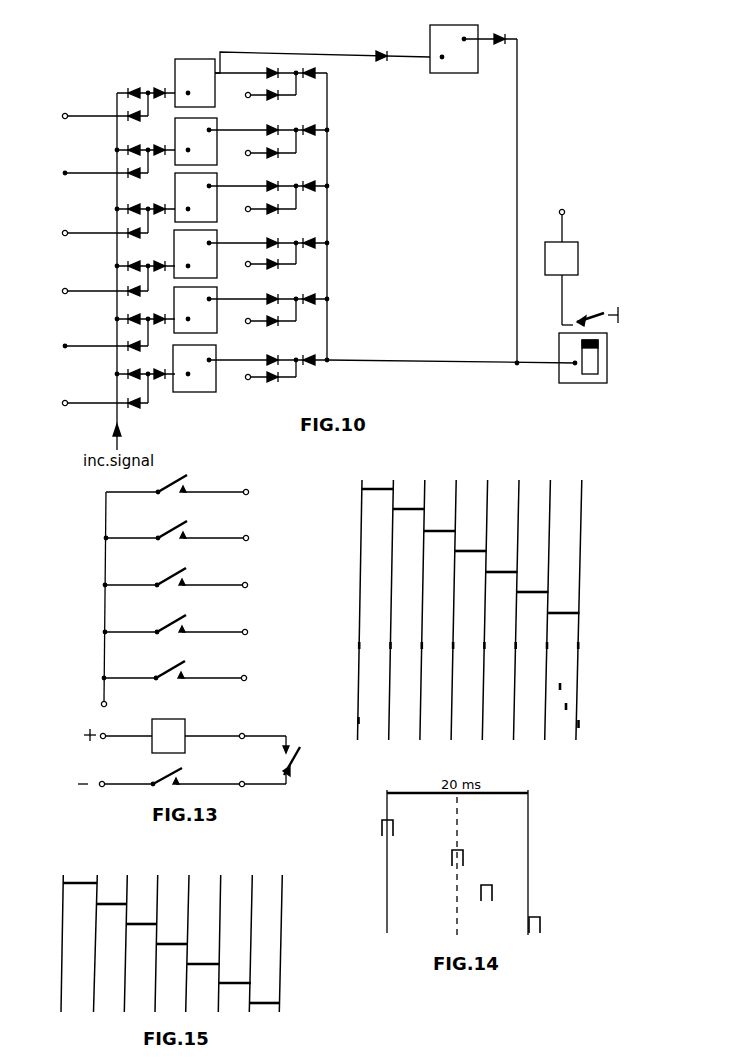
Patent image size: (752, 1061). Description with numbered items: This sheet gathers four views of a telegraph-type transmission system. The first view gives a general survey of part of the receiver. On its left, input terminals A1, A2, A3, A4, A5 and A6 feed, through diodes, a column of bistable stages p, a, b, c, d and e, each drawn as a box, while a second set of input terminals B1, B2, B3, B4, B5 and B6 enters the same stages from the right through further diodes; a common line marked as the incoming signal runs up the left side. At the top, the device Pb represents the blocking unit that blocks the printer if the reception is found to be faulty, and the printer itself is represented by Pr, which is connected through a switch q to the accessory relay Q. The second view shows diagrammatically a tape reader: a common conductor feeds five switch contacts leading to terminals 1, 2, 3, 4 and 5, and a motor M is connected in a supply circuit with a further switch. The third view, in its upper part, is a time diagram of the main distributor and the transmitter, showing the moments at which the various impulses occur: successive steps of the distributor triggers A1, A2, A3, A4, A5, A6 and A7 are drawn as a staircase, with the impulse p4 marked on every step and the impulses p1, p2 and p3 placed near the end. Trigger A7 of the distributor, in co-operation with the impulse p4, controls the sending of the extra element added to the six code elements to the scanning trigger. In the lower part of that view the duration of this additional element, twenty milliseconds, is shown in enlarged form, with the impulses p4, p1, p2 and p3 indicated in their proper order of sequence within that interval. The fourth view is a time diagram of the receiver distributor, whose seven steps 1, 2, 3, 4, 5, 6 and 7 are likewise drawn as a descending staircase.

In FIG. 10, the input terminal A1 is at (94, 111).
In FIG. 14, the input terminal A1 is at (363, 488).
In FIG. 10, the input terminal A2 is at (94, 168).
In FIG. 14, the input terminal A2 is at (378, 508).
In FIG. 10, the input terminal A3 is at (94, 228).
In FIG. 14, the input terminal A3 is at (394, 528).
In FIG. 10, the input terminal A4 is at (94, 285).
In FIG. 14, the input terminal A4 is at (409, 548).
In FIG. 10, the input terminal A5 is at (94, 339).
In FIG. 14, the input terminal A5 is at (425, 568).
In FIG. 10, the input terminal A6 is at (94, 395).
In FIG. 14, the input terminal A6 is at (440, 588).
In FIG. 14, the trigger of the distributor A7 is at (455, 699).
In FIG. 10, the input terminal B1 is at (263, 90).
In FIG. 10, the input terminal B2 is at (263, 148).
In FIG. 10, the input terminal B3 is at (263, 203).
In FIG. 10, the input terminal B4 is at (263, 259).
In FIG. 10, the input terminal B5 is at (263, 316).
In FIG. 10, the input terminal B6 is at (263, 375).
In FIG. 10, the flip-flop p is at (273, 79).
In FIG. 10, the flip-flop a is at (221, 141).
In FIG. 10, the flip-flop b is at (221, 197).
In FIG. 10, the flip-flop c is at (221, 254).
In FIG. 10, the flip-flop d is at (221, 310).
In FIG. 10, the flip-flop e is at (221, 368).
In FIG. 10, the printer blocking device Pb is at (474, 195).
In FIG. 10, the printer Pr is at (570, 267).
In FIG. 10, the switch q is at (595, 313).
In FIG. 10, the accessory relay Q is at (592, 358).
In FIG. 13, the motor M is at (189, 753).
In FIG. 13, the switch / step 1 is at (184, 488).
In FIG. 15, the switch / step 1 is at (80, 869).
In FIG. 13, the switch / step 2 is at (184, 534).
In FIG. 15, the switch / step 2 is at (112, 879).
In FIG. 13, the switch / step 3 is at (183, 581).
In FIG. 15, the switch / step 3 is at (141, 889).
In FIG. 13, the switch / step 4 is at (183, 628).
In FIG. 15, the switch / step 4 is at (172, 899).
In FIG. 13, the switch / step 5 is at (183, 674).
In FIG. 15, the switch / step 5 is at (203, 909).
In FIG. 15, the step 6 is at (235, 919).
In FIG. 15, the step 7 is at (265, 929).
In FIG. 14, the pulse p1 is at (444, 771).
In FIG. 14, the pulse p2 is at (447, 798).
In FIG. 14, the pulse p3 is at (453, 823).
In FIG. 14, the impulse p4 is at (454, 737).